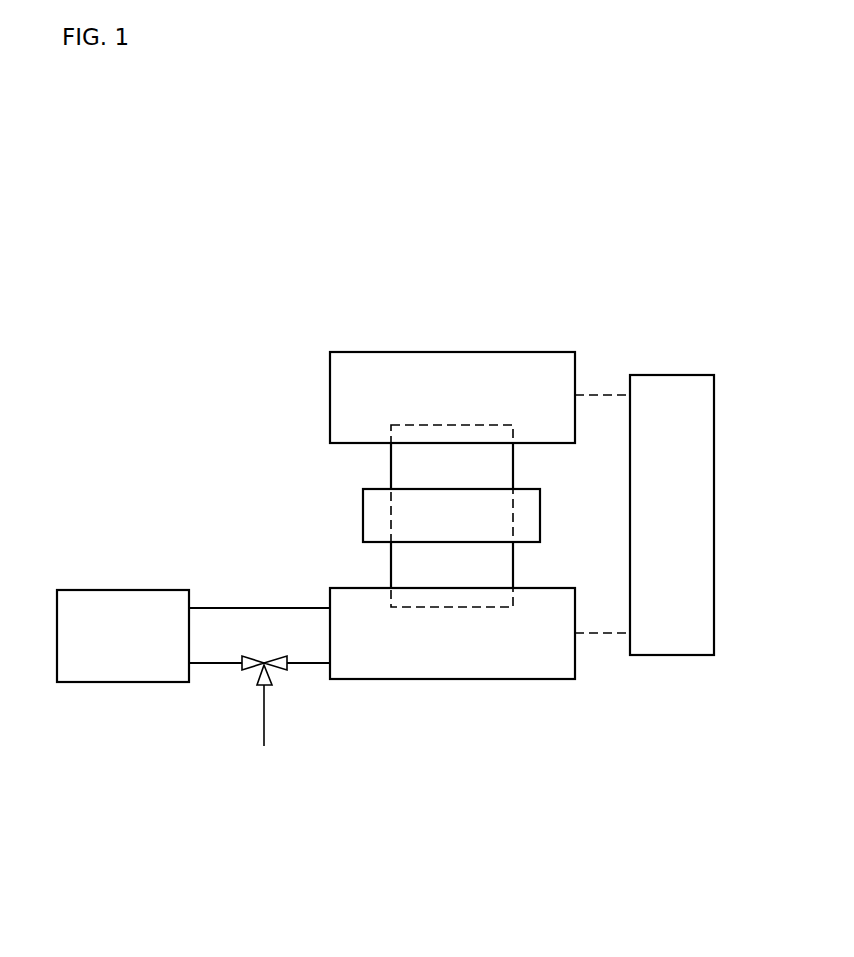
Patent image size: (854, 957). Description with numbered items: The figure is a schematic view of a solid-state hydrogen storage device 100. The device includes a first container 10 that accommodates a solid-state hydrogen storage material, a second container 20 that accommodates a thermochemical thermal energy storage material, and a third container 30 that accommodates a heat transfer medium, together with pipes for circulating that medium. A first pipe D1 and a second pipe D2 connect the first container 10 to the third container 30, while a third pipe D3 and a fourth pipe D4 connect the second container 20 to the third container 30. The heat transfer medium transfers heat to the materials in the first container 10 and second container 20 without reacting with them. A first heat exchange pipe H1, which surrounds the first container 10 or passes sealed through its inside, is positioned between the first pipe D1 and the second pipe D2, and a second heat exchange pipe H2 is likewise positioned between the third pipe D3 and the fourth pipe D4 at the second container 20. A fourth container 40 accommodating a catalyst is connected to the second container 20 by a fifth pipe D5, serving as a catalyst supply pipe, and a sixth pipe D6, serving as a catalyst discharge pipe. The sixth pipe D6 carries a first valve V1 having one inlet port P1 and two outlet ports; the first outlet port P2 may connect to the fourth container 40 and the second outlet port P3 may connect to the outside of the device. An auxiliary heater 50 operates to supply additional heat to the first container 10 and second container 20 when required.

The solid-state hydrogen storage device 100 is at (422, 196).
The first container 10 is at (330, 398).
The second container 20 is at (555, 680).
The third container 30 is at (540, 515).
The fourth container 40 is at (121, 590).
The auxiliary heater 50 is at (714, 517).
The first pipe D1 is at (513, 468).
The second pipe D2 is at (391, 470).
The third pipe D3 is at (391, 570).
The fourth pipe D4 is at (513, 568).
The fifth pipe D5 is at (243, 608).
The sixth pipe D6 is at (203, 665).
The first valve V1 is at (264, 688).
The inlet port P1 is at (287, 668).
The first outlet port P2 is at (243, 668).
The second outlet port P3 is at (277, 672).
The first heat exchange pipe H1 is at (441, 425).
The second heat exchange pipe H2 is at (441, 607).